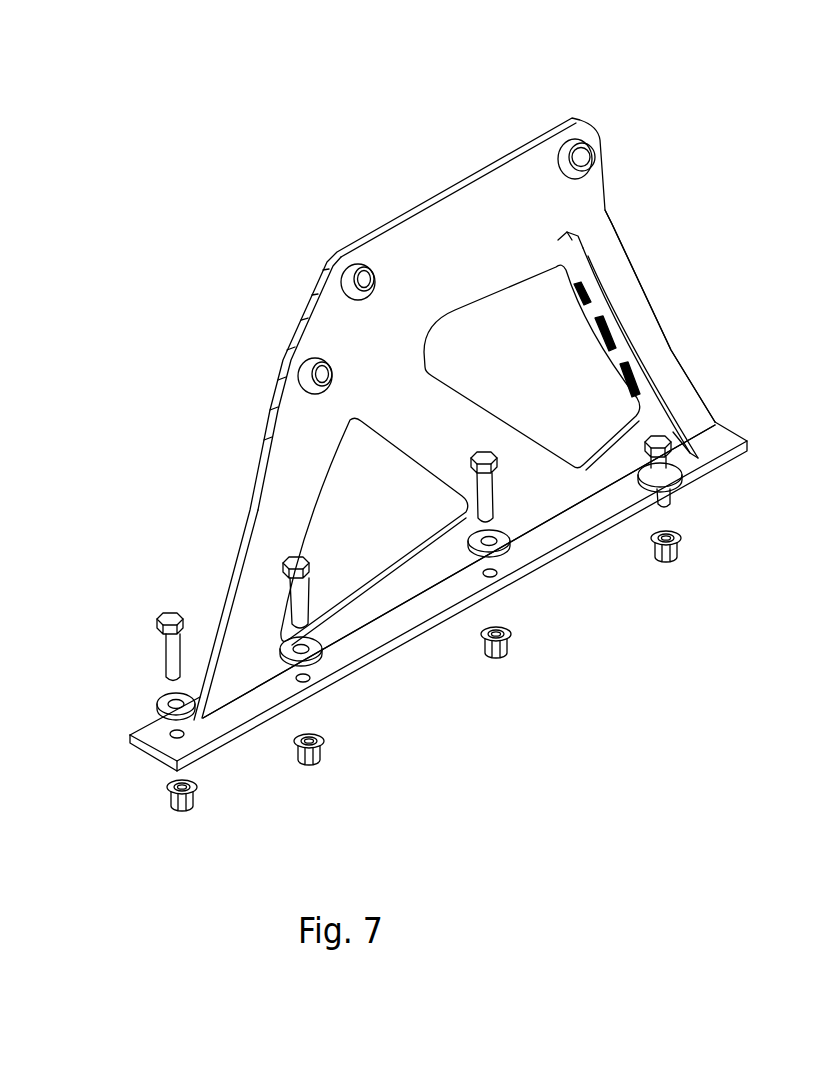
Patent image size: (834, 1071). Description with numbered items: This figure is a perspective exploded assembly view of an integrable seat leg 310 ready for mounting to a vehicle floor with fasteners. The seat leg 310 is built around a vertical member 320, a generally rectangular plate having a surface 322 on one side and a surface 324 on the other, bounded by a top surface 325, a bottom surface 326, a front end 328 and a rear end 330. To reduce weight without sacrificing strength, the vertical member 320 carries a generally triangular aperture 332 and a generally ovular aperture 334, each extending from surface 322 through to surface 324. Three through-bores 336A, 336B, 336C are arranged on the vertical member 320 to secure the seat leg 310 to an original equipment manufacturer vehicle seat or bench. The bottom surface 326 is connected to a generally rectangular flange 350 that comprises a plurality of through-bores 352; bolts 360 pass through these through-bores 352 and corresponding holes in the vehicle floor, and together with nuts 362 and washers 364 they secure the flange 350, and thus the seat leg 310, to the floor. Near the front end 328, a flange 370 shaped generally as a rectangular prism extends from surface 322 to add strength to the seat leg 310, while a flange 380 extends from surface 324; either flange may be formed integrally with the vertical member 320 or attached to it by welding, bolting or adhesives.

The integrable seat leg 310 is at (625, 78).
The vertical member 320 is at (330, 312).
The surface 322 is at (270, 412).
The surface 324 is at (402, 252).
The top surface 325 is at (436, 200).
The bottom surface 326 is at (573, 512).
The front end 328 is at (642, 289).
The rear end 330 is at (240, 533).
The aperture 332 is at (347, 495).
The aperture 334 is at (505, 300).
The through-bore 336A is at (320, 376).
The through-bore 336B is at (361, 277).
The through-bore 336C is at (586, 157).
The flange 350 is at (723, 440).
The through-bores 352 is at (176, 736).
The bolts 360 is at (168, 650).
The nuts 362 is at (186, 808).
The washers 364 is at (158, 704).
The flange 370 is at (591, 254).
The flange 380 is at (558, 290).